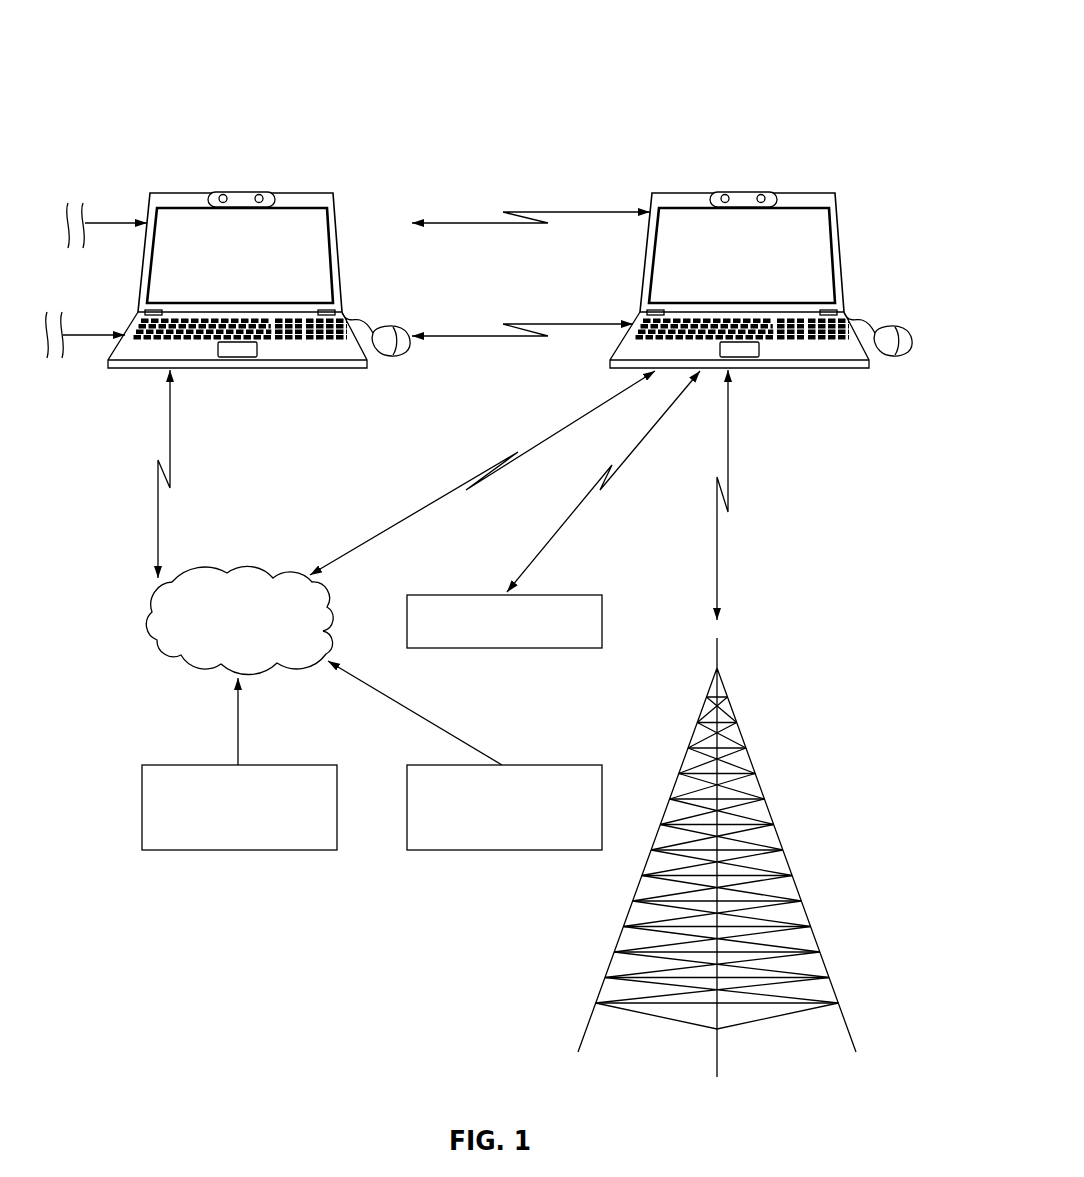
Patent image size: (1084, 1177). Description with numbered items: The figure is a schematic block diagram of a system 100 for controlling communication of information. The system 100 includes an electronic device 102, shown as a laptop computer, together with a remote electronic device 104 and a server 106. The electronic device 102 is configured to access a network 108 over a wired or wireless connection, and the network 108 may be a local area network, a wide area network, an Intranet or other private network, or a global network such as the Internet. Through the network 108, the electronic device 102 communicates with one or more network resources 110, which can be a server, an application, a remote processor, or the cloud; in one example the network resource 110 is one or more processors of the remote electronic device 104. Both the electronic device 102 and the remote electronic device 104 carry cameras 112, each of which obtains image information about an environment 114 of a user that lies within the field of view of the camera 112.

The system 100 is at (503, 546).
The electronic device 102 is at (785, 256).
The remote electronic device 104 is at (304, 193).
The server 106 is at (463, 594).
The network 108 is at (253, 567).
The network resource 110 is at (237, 851).
The camera 112 is at (220, 194).
The environment 114 is at (872, 229).